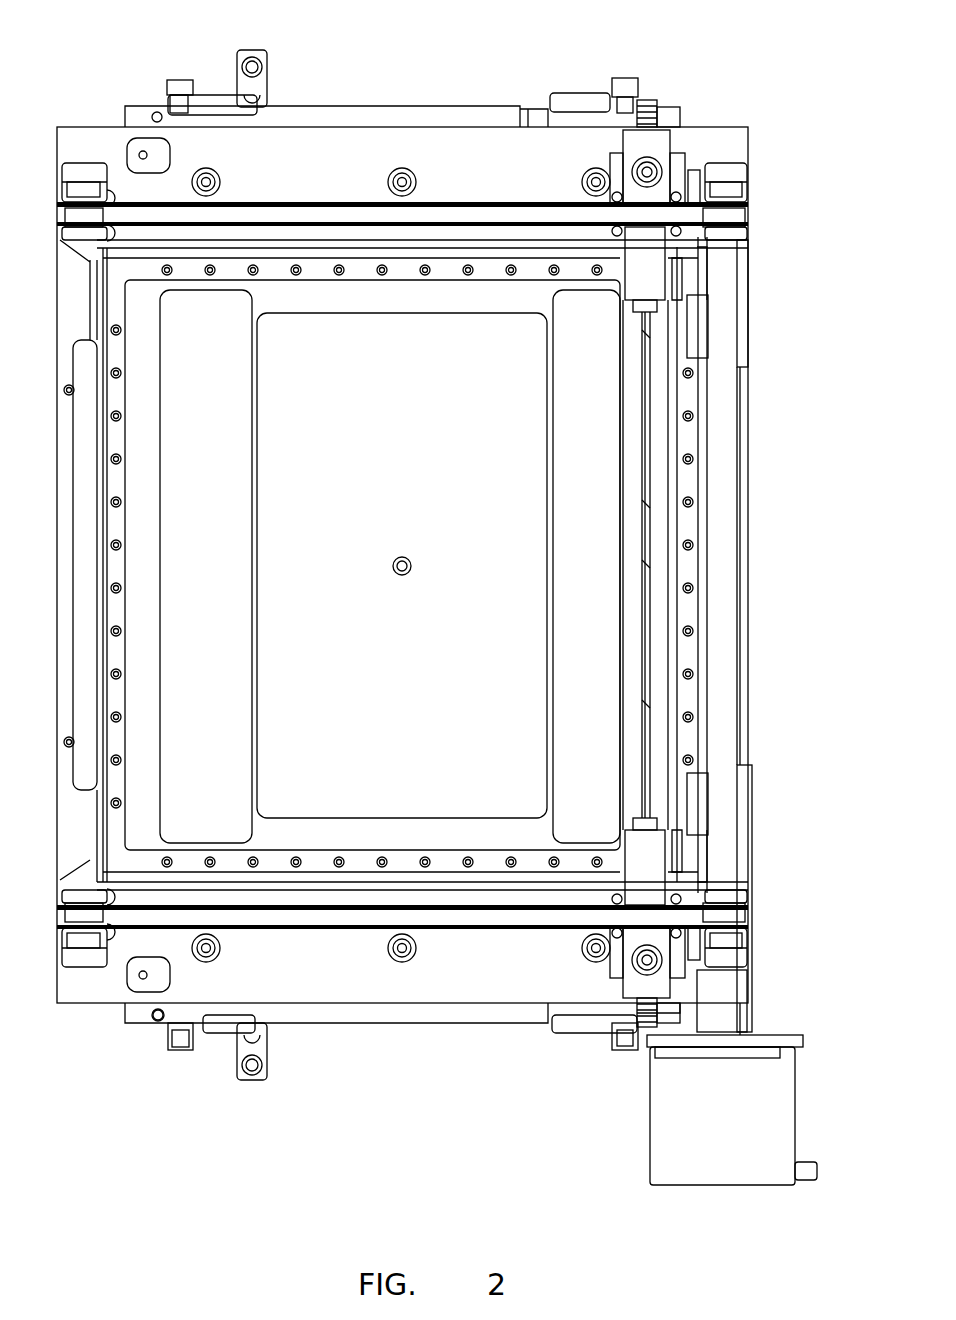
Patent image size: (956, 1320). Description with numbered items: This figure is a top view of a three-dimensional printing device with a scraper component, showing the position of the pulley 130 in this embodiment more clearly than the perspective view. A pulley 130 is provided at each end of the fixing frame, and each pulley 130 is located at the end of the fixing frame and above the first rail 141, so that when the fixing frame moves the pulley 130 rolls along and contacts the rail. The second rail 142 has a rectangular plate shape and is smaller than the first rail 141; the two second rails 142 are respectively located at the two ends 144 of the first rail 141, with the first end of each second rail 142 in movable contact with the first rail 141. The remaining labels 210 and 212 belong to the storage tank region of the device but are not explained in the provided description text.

The pulley 130 is at (655, 110).
The first rail 141 is at (398, 1015).
The second rail 142 is at (208, 1027).
The end of the first rail 144 is at (160, 1027).
The guide rail 210 is at (637, 660).
The carrier plate 212 is at (480, 448).